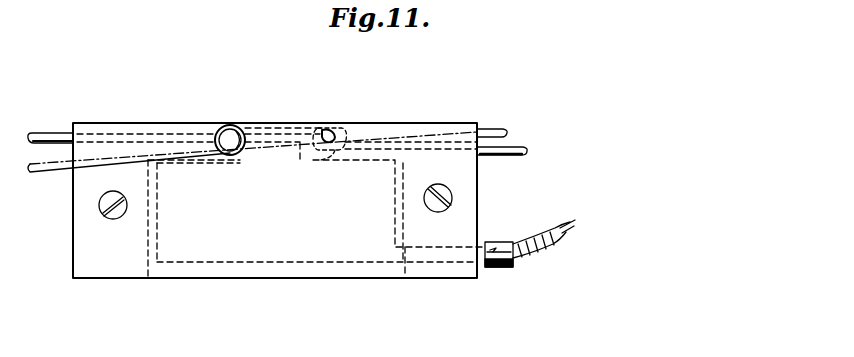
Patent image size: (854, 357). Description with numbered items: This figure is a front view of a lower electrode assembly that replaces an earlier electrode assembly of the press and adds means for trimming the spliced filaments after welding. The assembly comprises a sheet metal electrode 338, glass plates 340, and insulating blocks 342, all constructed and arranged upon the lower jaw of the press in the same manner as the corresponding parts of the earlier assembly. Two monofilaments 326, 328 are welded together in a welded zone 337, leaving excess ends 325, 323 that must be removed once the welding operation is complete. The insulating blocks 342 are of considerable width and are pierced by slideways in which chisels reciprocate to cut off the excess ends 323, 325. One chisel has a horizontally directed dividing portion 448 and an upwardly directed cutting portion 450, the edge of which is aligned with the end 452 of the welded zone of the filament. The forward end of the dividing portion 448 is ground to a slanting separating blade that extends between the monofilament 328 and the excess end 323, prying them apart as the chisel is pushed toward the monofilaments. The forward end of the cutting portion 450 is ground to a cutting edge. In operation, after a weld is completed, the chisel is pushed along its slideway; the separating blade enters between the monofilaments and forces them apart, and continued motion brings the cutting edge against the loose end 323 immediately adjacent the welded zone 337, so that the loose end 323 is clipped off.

The monofilament 326 is at (50, 133).
The excess end 325 is at (46, 174).
The insulating block 342 is at (275, 200).
The glass plate 340 is at (148, 265).
The sheet metal electrode 338 is at (200, 265).
The welded zone 337 is at (278, 125).
The end of the welded zone 452 is at (330, 124).
The cutting portion 450 is at (336, 123).
The dividing portion 448 is at (340, 125).
The excess end 323 is at (497, 131).
The monofilament 328 is at (515, 150).